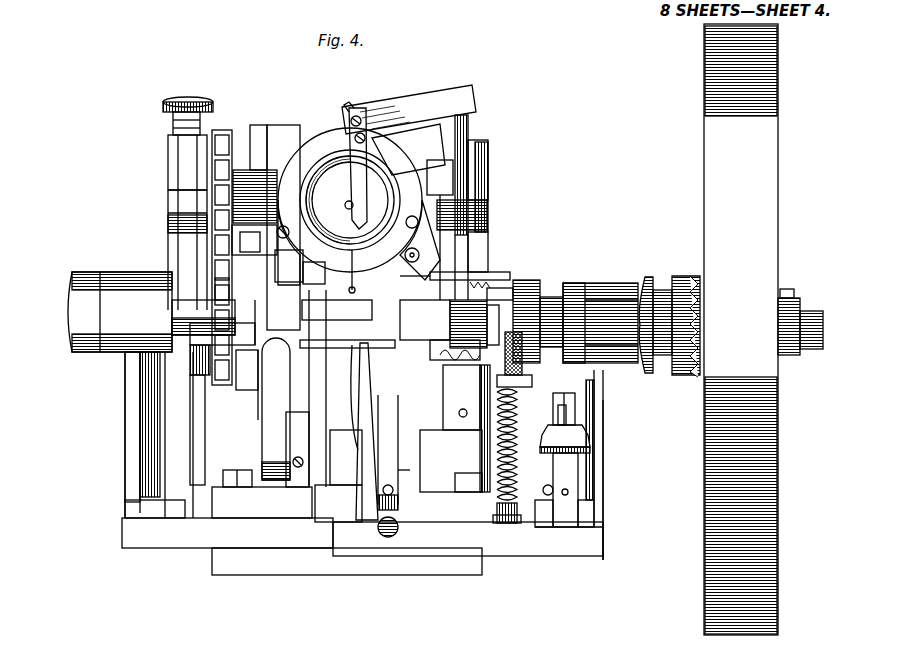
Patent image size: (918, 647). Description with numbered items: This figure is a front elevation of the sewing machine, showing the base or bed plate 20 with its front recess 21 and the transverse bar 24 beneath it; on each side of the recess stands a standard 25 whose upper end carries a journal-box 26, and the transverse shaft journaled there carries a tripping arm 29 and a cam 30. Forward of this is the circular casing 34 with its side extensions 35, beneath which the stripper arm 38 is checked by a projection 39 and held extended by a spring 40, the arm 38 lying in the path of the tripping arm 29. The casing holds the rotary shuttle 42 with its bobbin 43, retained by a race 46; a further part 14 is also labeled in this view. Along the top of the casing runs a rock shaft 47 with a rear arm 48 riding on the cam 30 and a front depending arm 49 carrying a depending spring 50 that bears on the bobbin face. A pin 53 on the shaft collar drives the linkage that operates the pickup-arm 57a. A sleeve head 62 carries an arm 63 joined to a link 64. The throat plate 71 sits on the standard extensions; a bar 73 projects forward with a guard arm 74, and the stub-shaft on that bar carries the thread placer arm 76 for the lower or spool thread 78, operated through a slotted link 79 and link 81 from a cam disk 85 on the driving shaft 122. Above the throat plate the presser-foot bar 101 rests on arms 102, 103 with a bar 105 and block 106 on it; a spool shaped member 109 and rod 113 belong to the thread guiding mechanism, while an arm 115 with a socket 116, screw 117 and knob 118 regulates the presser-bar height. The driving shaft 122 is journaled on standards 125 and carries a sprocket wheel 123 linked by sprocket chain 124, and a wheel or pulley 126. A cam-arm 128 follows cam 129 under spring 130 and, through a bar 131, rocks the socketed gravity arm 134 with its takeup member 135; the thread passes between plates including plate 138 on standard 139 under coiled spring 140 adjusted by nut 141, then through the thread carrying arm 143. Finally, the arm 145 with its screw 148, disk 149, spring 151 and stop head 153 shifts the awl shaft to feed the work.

The pin 14 is at (356, 271).
The base or bed plate 20 is at (163, 540).
The recess 21 is at (358, 560).
The bar 24 is at (230, 570).
The standard 25 is at (540, 218).
The journal-box 26 is at (266, 126).
The tripping arm 29 is at (490, 160).
The cam 30 is at (466, 113).
The casing or housing 34 is at (307, 133).
The extension 35 is at (268, 258).
The stripper arm 38 is at (490, 285).
The projection 39 is at (456, 272).
The spring 40 is at (524, 300).
The shuttle 42 is at (200, 220).
The bobbin 43 is at (339, 211).
The race 46 is at (402, 160).
The rock shaft 47 is at (356, 106).
The laterally extended arm 48 is at (426, 96).
The depending arm 49 is at (378, 158).
The depending spring 50 is at (290, 138).
The pin 53 is at (455, 262).
The pickup-arm 57a is at (402, 248).
The head or annular flange 62 is at (470, 280).
The arm 63 is at (380, 385).
The link 64 is at (372, 418).
The throat plate 71 is at (276, 409).
The bar 73 is at (312, 482).
The arm or guard 74 is at (346, 457).
The thread placer arm 76 is at (396, 450).
The lower or spool thread 78 is at (590, 451).
The vertically slotted link 79 is at (306, 388).
The link 81 is at (270, 407).
The cam disk 85 is at (280, 130).
The presser-foot bar 101 is at (292, 324).
The arm 102 is at (480, 268).
The arm 103 is at (319, 273).
The bar 105 is at (292, 266).
The block 106 is at (300, 330).
The spool shaped member 109 is at (228, 285).
The rod 113 is at (222, 324).
The arm 115 is at (184, 205).
The screw threaded socket 116 is at (170, 160).
The screw 117 is at (174, 122).
The disk or knob 118 is at (180, 103).
The driving shaft 122 is at (545, 305).
The sprocket wheel 123 is at (215, 355).
The sprocket chain 124 is at (222, 236).
The standard 125 is at (135, 440).
The wheel or pulley 126 is at (710, 162).
The cam-arm 128 is at (510, 388).
The cam 129 is at (565, 293).
The spring 130 is at (520, 470).
The bar 131 is at (590, 445).
The socketed gravity arm 134 is at (400, 475).
The takeup member 135 is at (395, 537).
The plate 138 is at (582, 458).
The standard 139 is at (572, 483).
The coiled spring 140 is at (548, 440).
The nut 141 is at (575, 415).
The thread carrying arm 143 is at (354, 431).
The arm 145 is at (457, 428).
The screw 148 is at (562, 338).
The disk 149 is at (440, 138).
The spring 151 is at (449, 324).
The head 153 is at (562, 312).